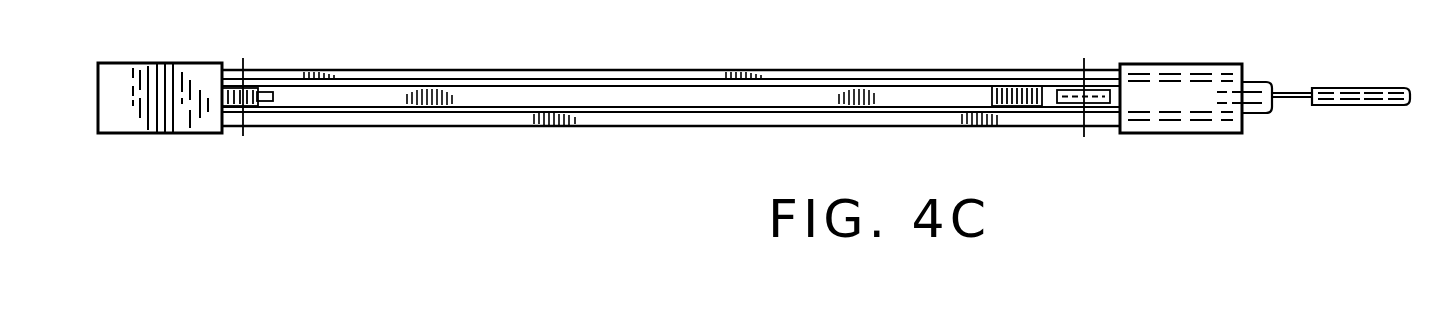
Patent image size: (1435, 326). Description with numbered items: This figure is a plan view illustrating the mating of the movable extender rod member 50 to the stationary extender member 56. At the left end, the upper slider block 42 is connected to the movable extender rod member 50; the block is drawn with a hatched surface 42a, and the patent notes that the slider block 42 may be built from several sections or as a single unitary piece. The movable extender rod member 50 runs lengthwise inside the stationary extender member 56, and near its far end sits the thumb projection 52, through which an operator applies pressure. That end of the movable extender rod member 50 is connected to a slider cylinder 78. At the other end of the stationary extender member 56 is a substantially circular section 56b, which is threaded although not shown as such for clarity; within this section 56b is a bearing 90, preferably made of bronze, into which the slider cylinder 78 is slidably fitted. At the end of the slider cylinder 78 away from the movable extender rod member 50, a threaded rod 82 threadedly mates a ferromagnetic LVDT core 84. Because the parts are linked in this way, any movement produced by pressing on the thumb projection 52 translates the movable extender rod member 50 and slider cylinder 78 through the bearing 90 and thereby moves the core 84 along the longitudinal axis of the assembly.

The upper slider block 42 is at (205, 133).
The knurled surface of end cap 42a is at (130, 122).
The movable extender rod member 50 is at (610, 105).
The thumb projection 52 is at (1013, 86).
The stationary extender member 56 is at (522, 70).
The substantially circular section 56b is at (1200, 133).
The slider cylinder 78 is at (1261, 82).
The threaded rod 82 is at (1293, 97).
The ferromagnetic LVDT core 84 is at (1365, 105).
The bearing 90 is at (1165, 100).